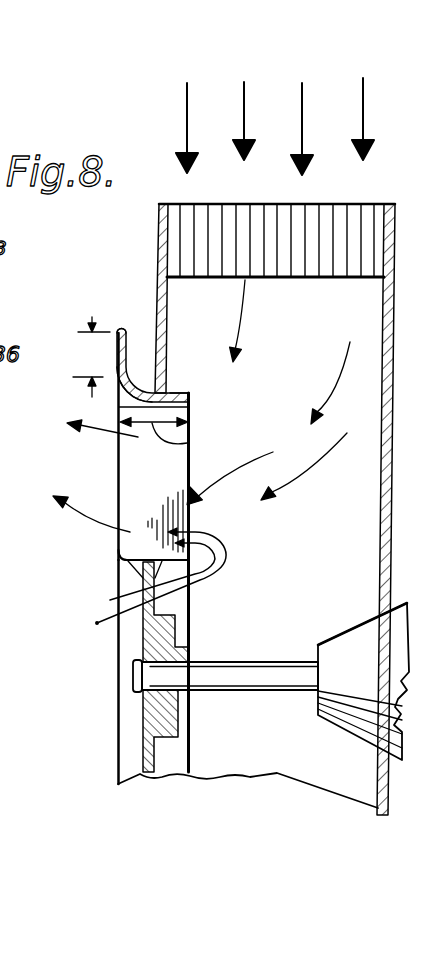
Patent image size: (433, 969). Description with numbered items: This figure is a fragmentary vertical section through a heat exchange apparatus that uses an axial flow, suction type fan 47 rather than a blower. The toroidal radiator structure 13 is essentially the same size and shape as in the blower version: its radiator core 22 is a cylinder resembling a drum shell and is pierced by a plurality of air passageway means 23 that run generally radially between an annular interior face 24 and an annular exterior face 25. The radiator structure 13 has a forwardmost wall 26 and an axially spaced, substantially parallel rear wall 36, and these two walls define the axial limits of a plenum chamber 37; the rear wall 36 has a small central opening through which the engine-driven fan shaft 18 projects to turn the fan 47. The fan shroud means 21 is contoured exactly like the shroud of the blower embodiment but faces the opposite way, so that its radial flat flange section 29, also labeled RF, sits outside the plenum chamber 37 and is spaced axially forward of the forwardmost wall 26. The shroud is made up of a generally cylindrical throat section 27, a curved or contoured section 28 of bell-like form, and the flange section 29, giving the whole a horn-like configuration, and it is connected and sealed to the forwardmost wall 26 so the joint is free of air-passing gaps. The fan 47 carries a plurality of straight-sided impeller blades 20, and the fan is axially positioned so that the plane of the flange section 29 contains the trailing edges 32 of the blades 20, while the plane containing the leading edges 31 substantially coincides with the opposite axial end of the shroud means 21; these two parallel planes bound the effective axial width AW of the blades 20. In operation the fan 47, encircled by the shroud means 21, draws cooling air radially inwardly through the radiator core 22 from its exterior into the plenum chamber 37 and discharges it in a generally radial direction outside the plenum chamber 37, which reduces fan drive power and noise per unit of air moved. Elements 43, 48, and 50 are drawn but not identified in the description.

The toroidal radiator structure 13 is at (398, 270).
The fan shaft 18 is at (240, 672).
The fan impeller blade 20 is at (167, 479).
The fan shroud means 21 is at (196, 389).
The radiator core 22 is at (257, 214).
The air passageway means 23 is at (297, 218).
The annular interior face 24 is at (325, 280).
The annular exterior face 25 is at (184, 204).
The forwardmost wall 26 is at (155, 319).
The cylindrical throat section 27 is at (185, 397).
The curved contoured section 28 is at (118, 388).
The radial flat flange section 29 is at (141, 322).
The leading edge 31 is at (209, 451).
The trailing edge 32 is at (118, 458).
The rear wall 36 is at (381, 540).
The plenum chamber 37 is at (318, 612).
The spring wire 43 is at (222, 568).
The suction type fan 47 is at (132, 647).
The bearing boss 48 is at (199, 630).
The deflected air flow 50 is at (90, 524).
The effective axial width AW is at (192, 441).
The radial flat flange section RF is at (91, 357).